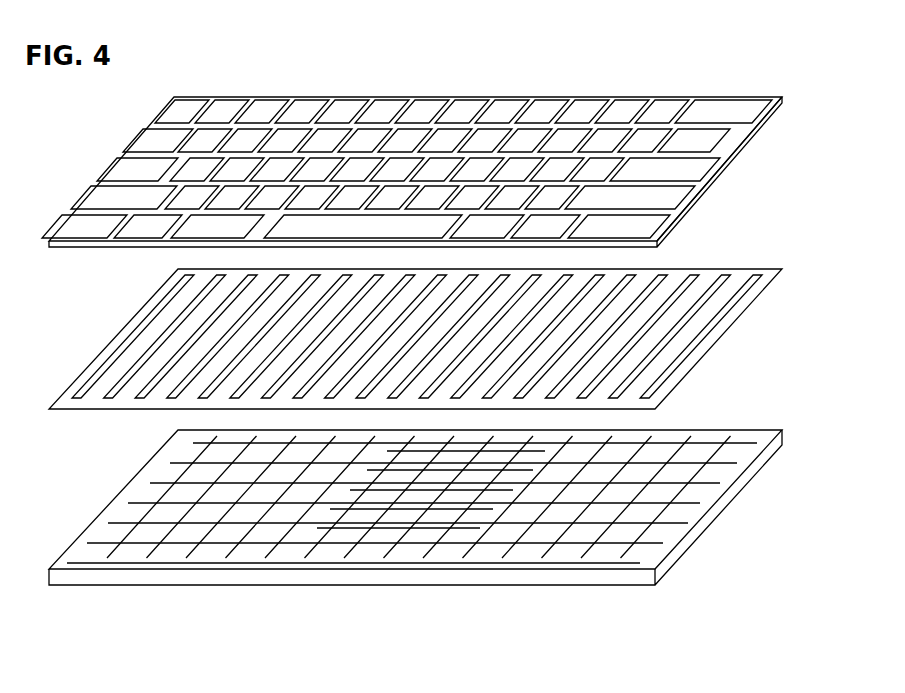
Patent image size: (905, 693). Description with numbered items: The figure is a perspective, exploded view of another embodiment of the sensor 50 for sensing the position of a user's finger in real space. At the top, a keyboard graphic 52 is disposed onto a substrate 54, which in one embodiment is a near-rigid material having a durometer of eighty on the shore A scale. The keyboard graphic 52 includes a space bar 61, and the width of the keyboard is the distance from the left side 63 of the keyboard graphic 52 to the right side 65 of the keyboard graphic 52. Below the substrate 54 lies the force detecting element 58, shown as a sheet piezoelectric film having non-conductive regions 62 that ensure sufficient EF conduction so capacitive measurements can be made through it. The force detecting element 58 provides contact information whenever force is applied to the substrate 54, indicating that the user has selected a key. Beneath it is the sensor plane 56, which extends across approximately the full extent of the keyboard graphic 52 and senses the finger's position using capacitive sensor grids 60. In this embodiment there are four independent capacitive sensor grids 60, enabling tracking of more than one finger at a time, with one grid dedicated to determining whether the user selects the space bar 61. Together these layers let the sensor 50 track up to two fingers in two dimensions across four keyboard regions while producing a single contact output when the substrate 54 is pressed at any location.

The sensor 50 is at (712, 80).
The keyboard graphic 52 is at (547, 103).
The substrate 54 is at (753, 138).
The sensor plane 56 is at (740, 482).
The force detecting element 58 is at (733, 323).
The capacitive sensor grids 60 is at (535, 538).
The space bar 61 is at (356, 228).
The non-conductive regions 62 is at (732, 288).
The left side 63 is at (130, 145).
The right side 65 is at (718, 175).